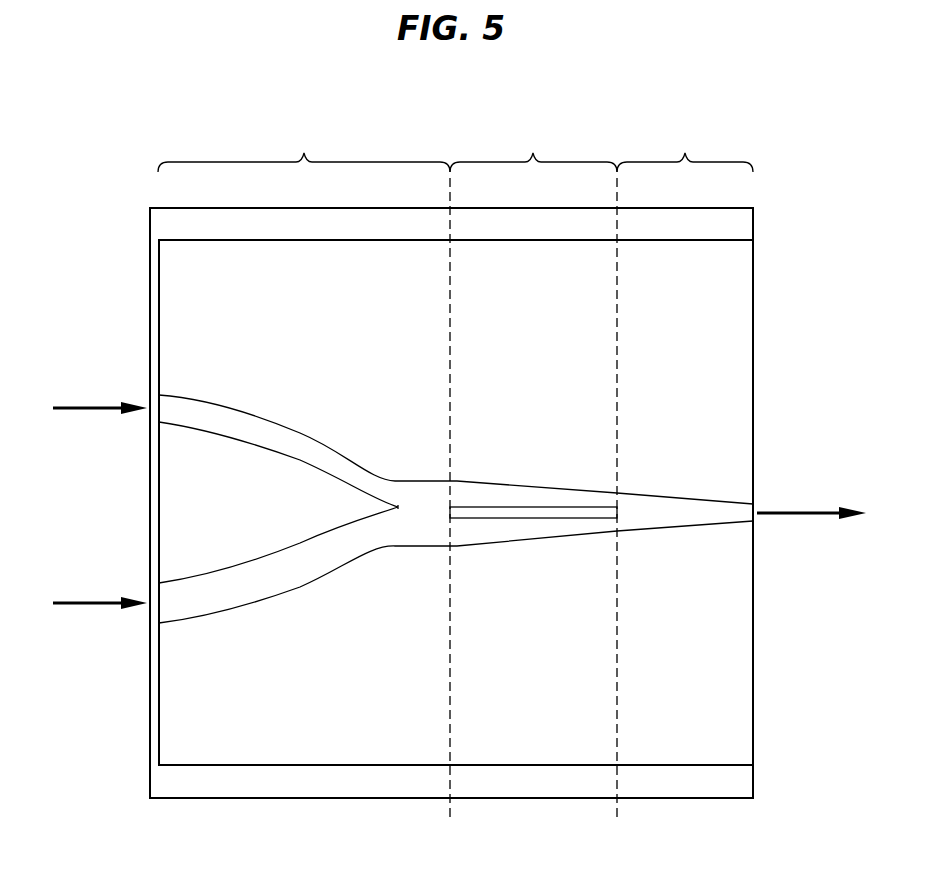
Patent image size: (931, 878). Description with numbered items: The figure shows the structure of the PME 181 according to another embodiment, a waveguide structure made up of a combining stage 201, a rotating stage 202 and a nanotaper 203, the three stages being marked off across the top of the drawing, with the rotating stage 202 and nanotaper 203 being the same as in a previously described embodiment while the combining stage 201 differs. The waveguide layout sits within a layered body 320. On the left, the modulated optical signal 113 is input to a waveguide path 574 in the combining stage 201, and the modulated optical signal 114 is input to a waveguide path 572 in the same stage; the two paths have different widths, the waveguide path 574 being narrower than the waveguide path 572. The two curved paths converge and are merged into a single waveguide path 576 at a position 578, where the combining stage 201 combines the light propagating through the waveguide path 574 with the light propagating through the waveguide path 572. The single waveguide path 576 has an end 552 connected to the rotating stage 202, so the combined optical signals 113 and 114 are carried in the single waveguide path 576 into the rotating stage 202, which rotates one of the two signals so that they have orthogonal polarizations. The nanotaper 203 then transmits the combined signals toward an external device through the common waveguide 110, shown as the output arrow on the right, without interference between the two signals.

The PME 181 is at (210, 74).
The combining stage 201 is at (304, 472).
The rotating stage 202 is at (533, 472).
The nanotaper 203 is at (685, 149).
The modulated optical signal 113 is at (93, 361).
The modulated optical signal 114 is at (93, 556).
The waveguide path 574 is at (262, 437).
The waveguide path 572 is at (276, 573).
The single waveguide path 576 is at (420, 508).
The position 578 is at (399, 513).
The end 552 is at (448, 528).
The cladding layer 320 is at (398, 733).
The common waveguide 110 is at (813, 510).